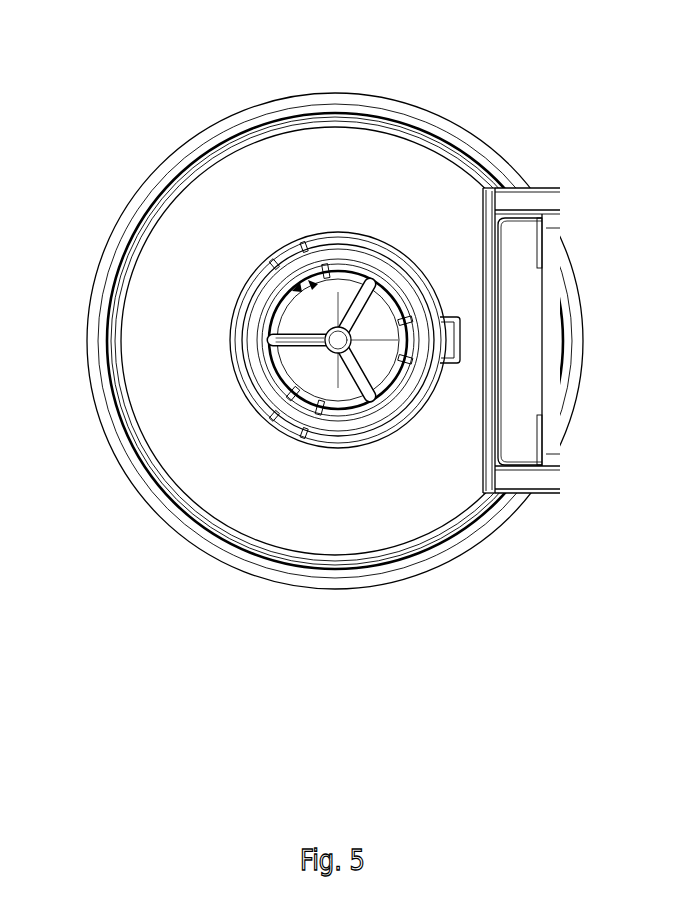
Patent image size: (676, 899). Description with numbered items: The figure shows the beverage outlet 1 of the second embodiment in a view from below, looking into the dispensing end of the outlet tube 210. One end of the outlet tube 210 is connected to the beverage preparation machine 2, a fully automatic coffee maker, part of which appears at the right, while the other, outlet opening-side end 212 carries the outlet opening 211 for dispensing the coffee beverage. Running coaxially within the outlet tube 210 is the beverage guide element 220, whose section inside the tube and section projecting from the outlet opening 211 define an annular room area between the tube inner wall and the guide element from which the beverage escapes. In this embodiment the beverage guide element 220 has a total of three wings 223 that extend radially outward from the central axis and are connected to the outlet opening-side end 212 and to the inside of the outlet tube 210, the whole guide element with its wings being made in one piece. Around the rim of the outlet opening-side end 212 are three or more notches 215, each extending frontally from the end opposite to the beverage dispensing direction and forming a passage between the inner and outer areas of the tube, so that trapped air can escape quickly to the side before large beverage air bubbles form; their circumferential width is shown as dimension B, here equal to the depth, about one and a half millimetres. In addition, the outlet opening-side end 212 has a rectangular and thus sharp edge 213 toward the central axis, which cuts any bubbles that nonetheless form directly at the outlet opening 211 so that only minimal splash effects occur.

The beverage outlet 1 is at (388, 165).
The beverage preparation machine 2 is at (578, 135).
The outlet tube 210 is at (335, 268).
The outlet opening 211 is at (303, 363).
The outlet opening-side end 212 is at (387, 297).
The sharp edge 213 is at (380, 373).
The notch 215 is at (284, 288).
The beverage guide element 220 is at (327, 372).
The wing 223 is at (273, 342).